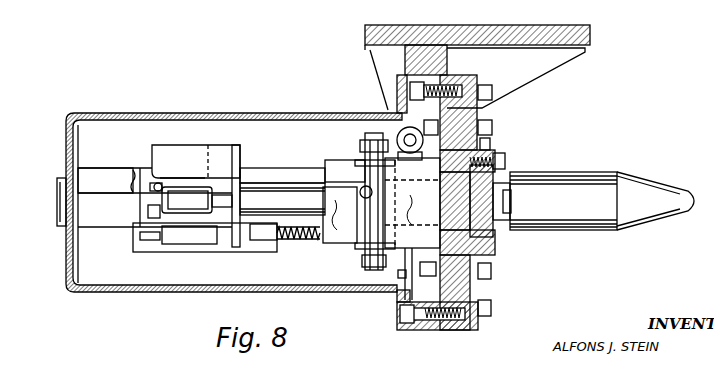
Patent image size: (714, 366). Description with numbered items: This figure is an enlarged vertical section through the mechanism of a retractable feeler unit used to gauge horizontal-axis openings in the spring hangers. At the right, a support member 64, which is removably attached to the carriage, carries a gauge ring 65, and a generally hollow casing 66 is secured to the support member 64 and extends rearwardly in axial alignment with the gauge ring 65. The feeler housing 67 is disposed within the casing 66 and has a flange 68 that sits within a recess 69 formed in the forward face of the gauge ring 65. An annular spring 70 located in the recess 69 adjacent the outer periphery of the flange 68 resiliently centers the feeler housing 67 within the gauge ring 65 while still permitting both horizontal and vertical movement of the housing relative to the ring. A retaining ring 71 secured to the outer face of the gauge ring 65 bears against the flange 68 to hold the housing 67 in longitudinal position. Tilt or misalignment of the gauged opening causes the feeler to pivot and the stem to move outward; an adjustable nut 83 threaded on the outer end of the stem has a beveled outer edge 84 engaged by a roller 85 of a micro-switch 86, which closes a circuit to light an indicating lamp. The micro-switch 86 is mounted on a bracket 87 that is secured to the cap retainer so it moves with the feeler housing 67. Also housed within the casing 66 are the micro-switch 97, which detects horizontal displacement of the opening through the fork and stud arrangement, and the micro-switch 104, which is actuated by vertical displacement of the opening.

The support member 64 is at (553, 60).
The gauge ring 65 is at (450, 77).
The casing 66 is at (268, 114).
The feeler housing 67 is at (282, 178).
The flange 68 is at (480, 146).
The recess 69 is at (480, 294).
The annular spring 70 is at (465, 114).
The retaining ring 71 is at (480, 272).
The adjustable nut 83 is at (200, 190).
The beveled outer edge 84 is at (160, 211).
The roller 85 is at (106, 181).
The micro-switch 86 is at (183, 153).
The bracket 87 is at (242, 157).
The micro-switch 97 is at (366, 136).
The micro-switch 104 is at (341, 236).